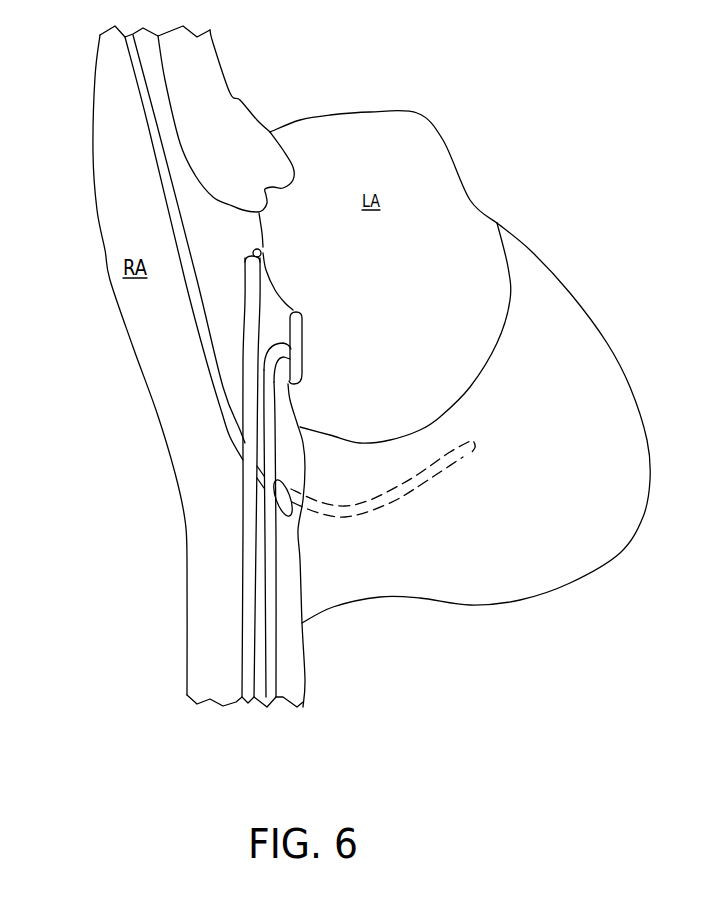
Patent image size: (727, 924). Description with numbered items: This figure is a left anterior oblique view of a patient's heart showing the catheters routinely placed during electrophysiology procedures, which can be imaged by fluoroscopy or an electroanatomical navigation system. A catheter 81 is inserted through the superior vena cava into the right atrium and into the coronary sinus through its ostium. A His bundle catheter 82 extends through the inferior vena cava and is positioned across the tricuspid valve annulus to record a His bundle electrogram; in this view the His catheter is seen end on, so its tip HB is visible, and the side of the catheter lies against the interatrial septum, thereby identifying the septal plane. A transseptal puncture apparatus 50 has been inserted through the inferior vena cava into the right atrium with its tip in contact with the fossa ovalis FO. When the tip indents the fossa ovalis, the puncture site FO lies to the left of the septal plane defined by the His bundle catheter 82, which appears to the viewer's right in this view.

The catheter 81 is at (150, 125).
The His bundle catheter 82 is at (247, 626).
The transseptal puncture apparatus 50 is at (275, 650).
The tip of the His catheter HB is at (263, 248).
The fossa ovalis FO is at (302, 340).